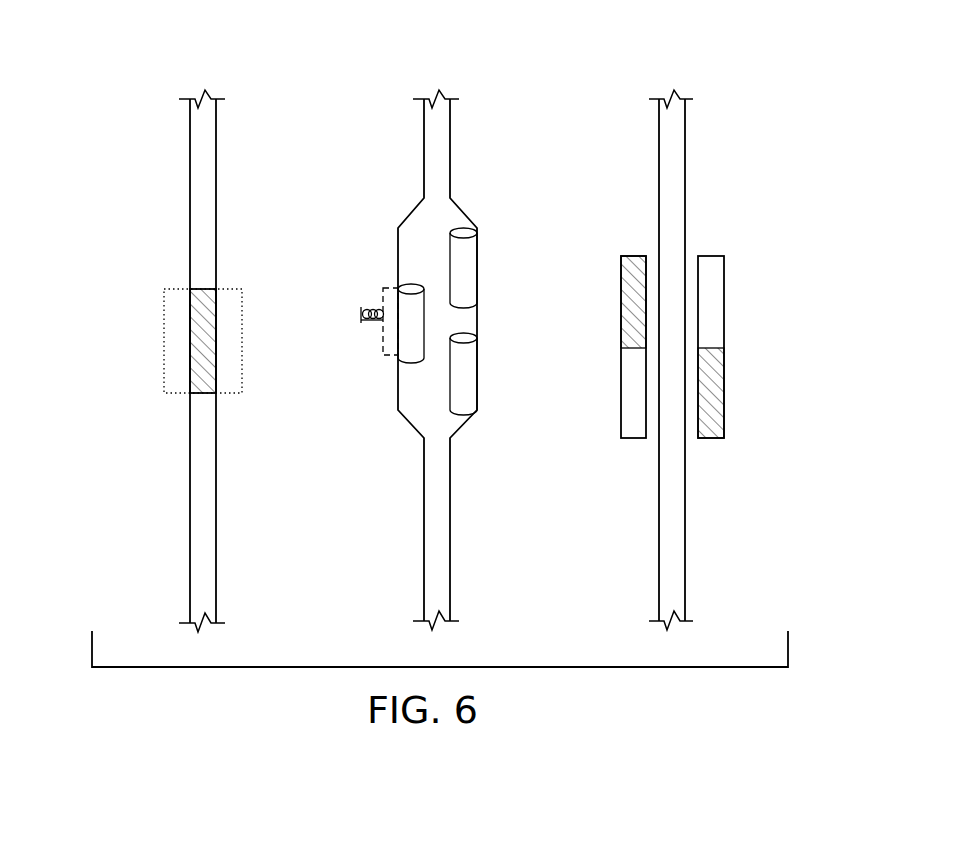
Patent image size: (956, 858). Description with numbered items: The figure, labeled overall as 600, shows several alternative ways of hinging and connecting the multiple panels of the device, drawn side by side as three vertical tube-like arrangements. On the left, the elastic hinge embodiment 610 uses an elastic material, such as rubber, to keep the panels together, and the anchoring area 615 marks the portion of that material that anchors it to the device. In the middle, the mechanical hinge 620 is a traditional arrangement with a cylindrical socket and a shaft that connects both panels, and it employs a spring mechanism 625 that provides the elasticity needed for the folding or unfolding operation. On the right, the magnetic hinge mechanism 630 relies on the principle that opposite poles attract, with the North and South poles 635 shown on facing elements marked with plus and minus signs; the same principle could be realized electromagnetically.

The flow cell configurations 600 is at (150, 76).
The elastic hinge embodiment 610 is at (200, 330).
The anchoring area 615 is at (172, 383).
The mechanical hinge 620 is at (442, 322).
The spring mechanism 625 is at (366, 304).
The magnetic hinge mechanism 630 is at (675, 290).
The opposite magnetic poles 635 is at (646, 418).